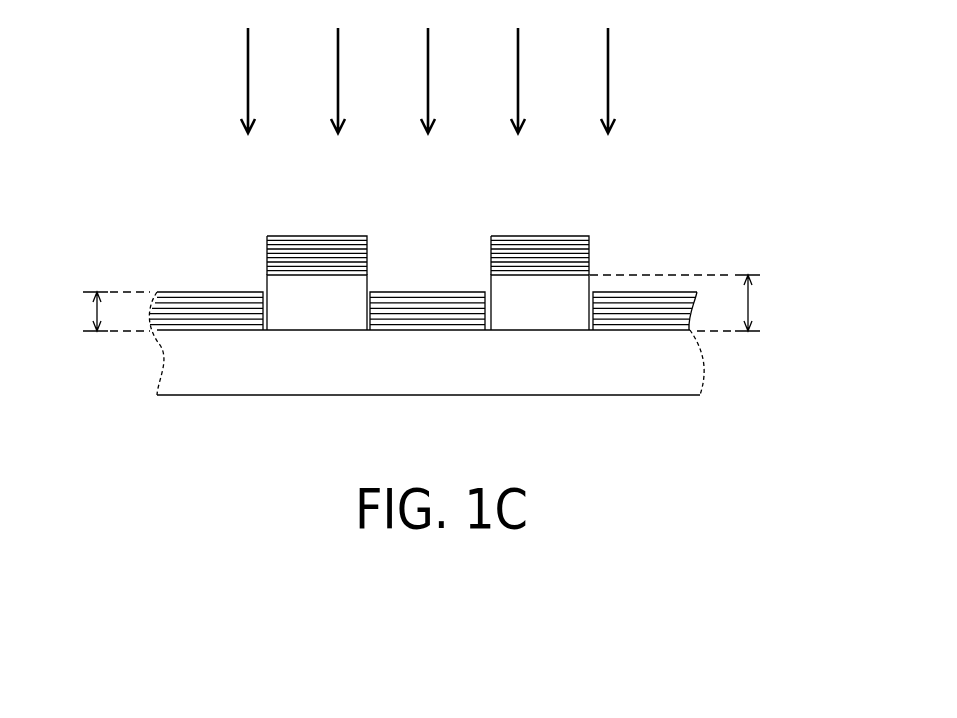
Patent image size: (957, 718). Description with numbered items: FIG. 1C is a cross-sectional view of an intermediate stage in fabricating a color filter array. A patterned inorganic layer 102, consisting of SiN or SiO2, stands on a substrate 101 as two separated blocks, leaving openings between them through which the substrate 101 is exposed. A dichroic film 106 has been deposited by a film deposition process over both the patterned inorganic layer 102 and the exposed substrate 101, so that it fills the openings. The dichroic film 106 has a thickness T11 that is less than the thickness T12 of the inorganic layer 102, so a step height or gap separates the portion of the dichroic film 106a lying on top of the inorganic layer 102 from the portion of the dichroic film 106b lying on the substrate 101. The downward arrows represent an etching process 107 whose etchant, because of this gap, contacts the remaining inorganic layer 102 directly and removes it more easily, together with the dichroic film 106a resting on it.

The substrate 101 is at (180, 362).
The inorganic layer 102 is at (315, 317).
The dichroic film 106 is at (130, 132).
The portion of the dichroic film disposed on the inorganic layer 106a is at (305, 234).
The portion of the dichroic film disposed on the substrate 106b is at (245, 292).
The etching process 107 is at (611, 70).
The thickness of the dichroic film T11 is at (90, 311).
The thickness of the inorganic layer T12 is at (701, 303).